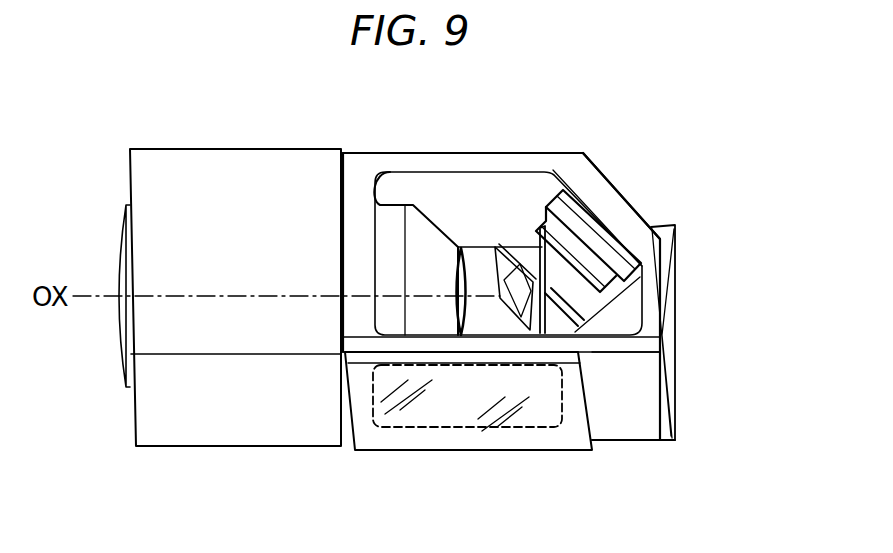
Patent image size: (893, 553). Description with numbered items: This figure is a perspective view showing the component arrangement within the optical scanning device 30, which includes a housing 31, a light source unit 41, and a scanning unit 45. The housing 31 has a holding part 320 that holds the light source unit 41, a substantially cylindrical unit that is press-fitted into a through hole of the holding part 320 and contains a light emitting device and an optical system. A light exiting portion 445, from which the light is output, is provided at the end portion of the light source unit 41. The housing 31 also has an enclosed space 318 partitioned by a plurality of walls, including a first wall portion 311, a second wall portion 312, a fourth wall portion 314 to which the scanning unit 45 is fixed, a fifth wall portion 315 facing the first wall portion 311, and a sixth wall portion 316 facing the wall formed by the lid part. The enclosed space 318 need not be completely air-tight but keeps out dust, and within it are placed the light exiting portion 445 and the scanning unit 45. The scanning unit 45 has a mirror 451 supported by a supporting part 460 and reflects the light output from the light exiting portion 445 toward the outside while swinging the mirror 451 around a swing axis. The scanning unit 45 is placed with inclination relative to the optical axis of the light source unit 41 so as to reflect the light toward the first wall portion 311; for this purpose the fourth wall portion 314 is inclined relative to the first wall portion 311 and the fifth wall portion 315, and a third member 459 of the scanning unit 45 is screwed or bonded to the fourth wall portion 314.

The optical scanning device 30 is at (750, 138).
The housing 31 is at (640, 407).
The first wall portion 311 is at (533, 415).
The second wall portion 312 is at (440, 220).
The fourth wall portion 314 is at (607, 205).
The fifth wall portion 315 is at (486, 160).
The sixth wall portion 316 is at (489, 322).
The enclosed space 318 is at (522, 207).
The holding part 320 is at (258, 413).
The light source unit 41 is at (390, 313).
The scanning unit 45 is at (605, 315).
The light exiting portion 445 is at (470, 276).
The mirror 451 is at (458, 288).
The third member 459 is at (602, 250).
The supporting part 460 is at (555, 324).